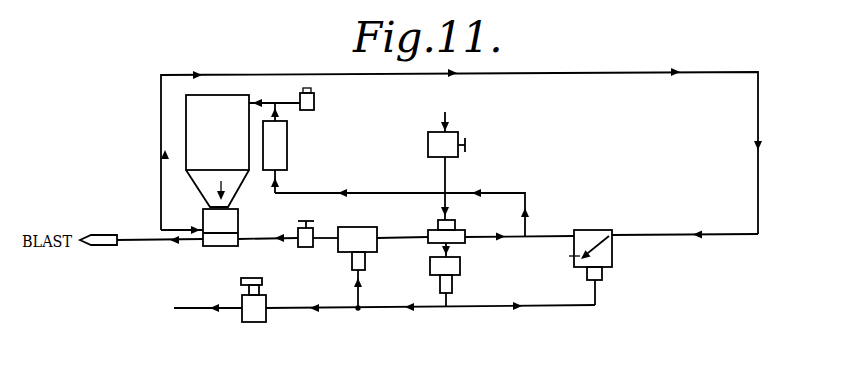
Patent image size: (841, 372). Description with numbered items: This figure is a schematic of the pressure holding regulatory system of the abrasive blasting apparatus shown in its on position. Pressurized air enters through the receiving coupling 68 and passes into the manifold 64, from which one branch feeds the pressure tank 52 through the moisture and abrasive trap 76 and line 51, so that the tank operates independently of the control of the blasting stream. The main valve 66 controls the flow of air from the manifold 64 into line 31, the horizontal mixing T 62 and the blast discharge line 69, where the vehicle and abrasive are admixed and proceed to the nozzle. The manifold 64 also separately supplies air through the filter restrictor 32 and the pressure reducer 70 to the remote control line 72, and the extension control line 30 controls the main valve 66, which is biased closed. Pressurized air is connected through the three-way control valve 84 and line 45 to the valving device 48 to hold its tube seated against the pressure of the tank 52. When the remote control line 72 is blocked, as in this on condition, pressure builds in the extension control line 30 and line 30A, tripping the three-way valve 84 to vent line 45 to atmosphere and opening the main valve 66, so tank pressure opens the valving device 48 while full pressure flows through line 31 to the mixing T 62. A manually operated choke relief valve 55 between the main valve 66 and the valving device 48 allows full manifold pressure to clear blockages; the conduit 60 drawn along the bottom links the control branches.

The line 45 is at (613, 72).
The blast discharge line 69 is at (153, 238).
The pressure tank 52 is at (217, 151).
The line 51 is at (256, 103).
The moisture and abrasive trap 76 is at (273, 143).
The valving device 48 is at (230, 223).
The horizontal mixing T 62 is at (218, 249).
The line 31 is at (271, 246).
The choke relief valve 55 is at (309, 236).
The main valve 66 is at (370, 247).
The extension control line 30 is at (360, 297).
The manifold 64 is at (418, 233).
The receiving coupling 68 is at (446, 154).
The filter restrictor 32 is at (455, 276).
The control conduit 60 is at (446, 309).
The 3-way control valve 84 is at (612, 258).
The line 30A is at (597, 299).
The pressure reducer 70 is at (249, 314).
The remote control line 72 is at (176, 309).